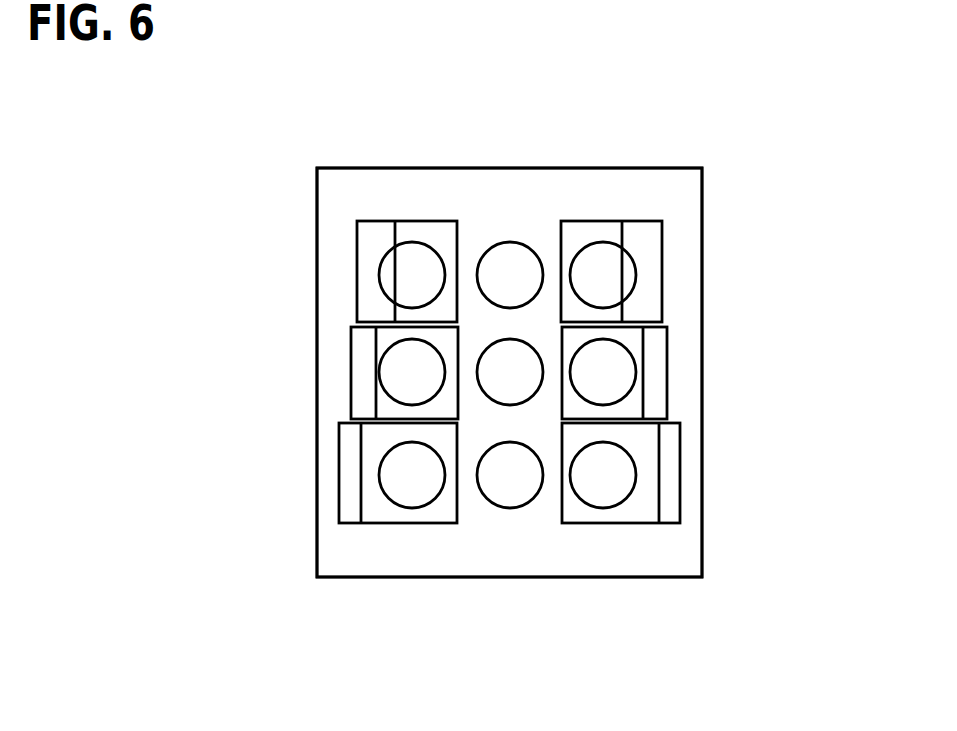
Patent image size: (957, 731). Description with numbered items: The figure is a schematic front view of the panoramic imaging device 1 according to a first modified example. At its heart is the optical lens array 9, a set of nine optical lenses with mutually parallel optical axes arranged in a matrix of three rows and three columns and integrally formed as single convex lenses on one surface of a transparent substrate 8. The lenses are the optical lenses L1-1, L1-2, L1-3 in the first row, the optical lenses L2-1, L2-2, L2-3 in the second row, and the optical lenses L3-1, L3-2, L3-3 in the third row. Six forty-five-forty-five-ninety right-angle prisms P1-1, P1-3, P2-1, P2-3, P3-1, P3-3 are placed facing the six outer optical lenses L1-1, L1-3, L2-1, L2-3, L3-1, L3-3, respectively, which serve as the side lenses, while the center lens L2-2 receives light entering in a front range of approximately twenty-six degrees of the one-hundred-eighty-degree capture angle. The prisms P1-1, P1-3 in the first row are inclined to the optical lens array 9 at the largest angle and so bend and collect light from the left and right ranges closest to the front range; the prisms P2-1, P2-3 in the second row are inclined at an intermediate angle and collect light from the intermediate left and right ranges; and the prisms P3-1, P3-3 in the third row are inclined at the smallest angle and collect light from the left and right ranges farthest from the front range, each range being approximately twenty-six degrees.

The panoramic imaging device 1 is at (565, 60).
The transparent substrate 8 is at (450, 188).
The optical lens array 9 is at (708, 143).
The 45-45-90 right-angle prism P1-1 is at (372, 248).
The 45-45-90 right-angle prism P2-1 is at (358, 345).
The 45-45-90 right-angle prism P3-1 is at (345, 476).
The 45-45-90 right-angle prism P1-3 is at (650, 247).
The 45-45-90 right-angle prism P2-3 is at (652, 351).
The 45-45-90 right-angle prism P3-3 is at (668, 470).
The optical lens L1-1 is at (412, 250).
The optical lens L1-2 is at (512, 250).
The optical lens L1-3 is at (608, 256).
The optical lens L2-1 is at (390, 373).
The optical lens L2-2 is at (495, 392).
The optical lens L2-3 is at (620, 378).
The optical lens L3-1 is at (410, 493).
The optical lens L3-2 is at (513, 493).
The optical lens L3-3 is at (615, 490).